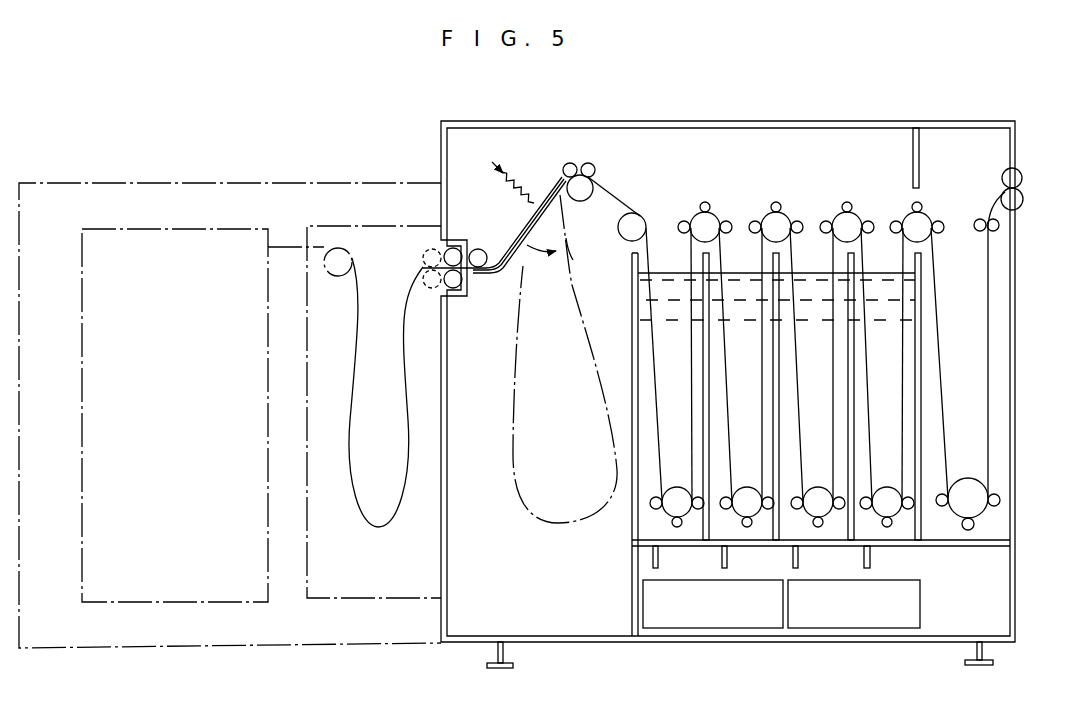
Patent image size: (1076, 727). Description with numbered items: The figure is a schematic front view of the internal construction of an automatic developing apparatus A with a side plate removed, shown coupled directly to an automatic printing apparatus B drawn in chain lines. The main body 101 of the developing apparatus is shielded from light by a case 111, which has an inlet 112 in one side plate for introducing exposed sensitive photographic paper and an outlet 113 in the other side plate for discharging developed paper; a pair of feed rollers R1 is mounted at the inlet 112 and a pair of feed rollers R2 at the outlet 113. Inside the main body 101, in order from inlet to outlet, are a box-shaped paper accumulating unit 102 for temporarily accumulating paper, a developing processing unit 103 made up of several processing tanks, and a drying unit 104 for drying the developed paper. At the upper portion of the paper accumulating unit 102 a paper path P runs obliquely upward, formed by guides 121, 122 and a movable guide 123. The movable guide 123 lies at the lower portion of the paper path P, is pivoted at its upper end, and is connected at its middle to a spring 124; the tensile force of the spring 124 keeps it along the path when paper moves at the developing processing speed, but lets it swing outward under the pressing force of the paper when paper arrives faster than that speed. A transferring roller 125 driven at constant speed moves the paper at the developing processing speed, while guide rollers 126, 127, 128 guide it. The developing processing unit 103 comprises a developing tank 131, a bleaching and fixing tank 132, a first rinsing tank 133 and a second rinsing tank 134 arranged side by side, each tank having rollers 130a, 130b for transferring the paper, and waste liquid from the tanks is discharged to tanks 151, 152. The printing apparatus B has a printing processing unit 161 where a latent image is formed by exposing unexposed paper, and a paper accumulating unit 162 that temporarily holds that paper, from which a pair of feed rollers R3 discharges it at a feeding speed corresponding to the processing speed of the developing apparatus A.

The automatic developing apparatus A is at (756, 109).
The automatic printing apparatus B is at (231, 167).
The paper path P is at (566, 232).
The pair of feed rollers R1 is at (446, 262).
The pair of feed rollers R2 is at (1001, 180).
The pair of feed rollers R3 is at (424, 275).
The main body 101 is at (436, 154).
The paper accumulating unit 102 is at (573, 450).
The developing processing unit 103 is at (777, 184).
The drying unit 104 is at (968, 323).
The case 111 is at (1015, 322).
The inlet 112 is at (466, 298).
The outlet 113 is at (1033, 201).
The guide 121 is at (505, 264).
The guide 122 is at (504, 241).
The movable guide 123 is at (606, 218).
The spring 124 is at (517, 172).
The transferring roller 125 is at (581, 175).
The guide roller 126 is at (477, 268).
The guide roller 127 is at (569, 162).
The guide roller 128 is at (593, 164).
The roller 130a is at (672, 508).
The roller 130b is at (673, 526).
The developing tank 131 is at (667, 250).
The bleaching and fixing tank 132 is at (738, 250).
The first rinsing tank 133 is at (815, 250).
The second rinsing tank 134 is at (882, 250).
The waste liquid tank 151 is at (725, 625).
The waste liquid tank 152 is at (857, 625).
The printing processing unit 161 is at (181, 452).
The paper accumulating unit 162 is at (387, 450).